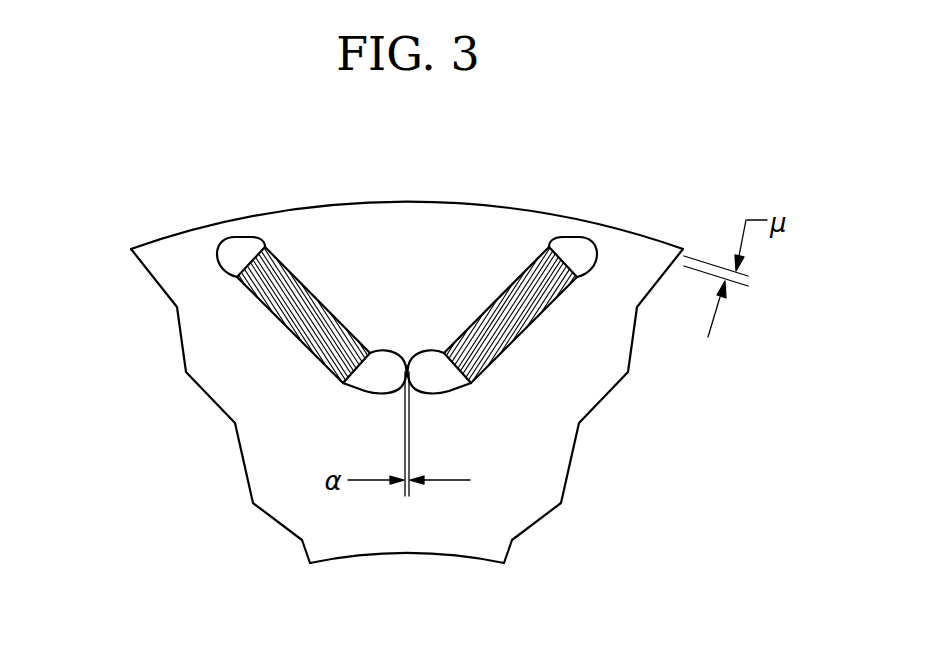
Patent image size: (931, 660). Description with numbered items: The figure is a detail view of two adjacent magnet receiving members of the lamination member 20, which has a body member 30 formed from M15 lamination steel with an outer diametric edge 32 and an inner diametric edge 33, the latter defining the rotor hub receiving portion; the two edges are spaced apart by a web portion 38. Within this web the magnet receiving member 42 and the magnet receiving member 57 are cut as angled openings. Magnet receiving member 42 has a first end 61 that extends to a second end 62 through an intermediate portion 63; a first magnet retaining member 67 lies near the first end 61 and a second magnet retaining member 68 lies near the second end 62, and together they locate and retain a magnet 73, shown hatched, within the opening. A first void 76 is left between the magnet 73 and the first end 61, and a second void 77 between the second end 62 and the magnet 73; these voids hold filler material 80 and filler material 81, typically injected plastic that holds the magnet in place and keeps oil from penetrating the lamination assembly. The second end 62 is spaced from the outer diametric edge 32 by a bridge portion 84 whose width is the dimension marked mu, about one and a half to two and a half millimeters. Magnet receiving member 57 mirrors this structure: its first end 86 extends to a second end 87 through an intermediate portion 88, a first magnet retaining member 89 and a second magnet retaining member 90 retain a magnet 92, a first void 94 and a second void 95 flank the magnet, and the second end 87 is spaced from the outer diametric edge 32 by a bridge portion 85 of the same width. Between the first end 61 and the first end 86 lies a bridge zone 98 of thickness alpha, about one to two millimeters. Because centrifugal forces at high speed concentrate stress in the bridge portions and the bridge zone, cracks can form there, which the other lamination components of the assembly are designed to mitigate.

The lamination member 20 is at (436, 366).
The body member 30 is at (418, 178).
The outer diametric edge 32 is at (613, 229).
The inner diametric edge 33 is at (447, 563).
The web portion 38 is at (418, 178).
The magnet receiving member 42 is at (555, 352).
The magnet receiving member 57 is at (262, 337).
The first end 61 is at (348, 358).
The second end 62 is at (582, 193).
The intermediate portion 63 is at (483, 307).
The first magnet retaining member 67 is at (459, 397).
The second magnet retaining member 68 is at (588, 290).
The magnet 73 is at (540, 291).
The first void 76 is at (446, 397).
The second void 77 is at (628, 193).
The filler material 80 is at (443, 373).
The filler material 81 is at (567, 247).
The bridge portion 84 is at (593, 238).
The bridge portion 85 is at (210, 237).
The first end 86 is at (400, 393).
The second end 87 is at (221, 235).
The intermediate portion 88 is at (245, 315).
The first magnet retaining member 89 is at (377, 347).
The second magnet retaining member 90 is at (233, 277).
The magnet 92 is at (263, 287).
The first void 94 is at (328, 384).
The second void 95 is at (171, 203).
The bridge zone 98 is at (413, 374).